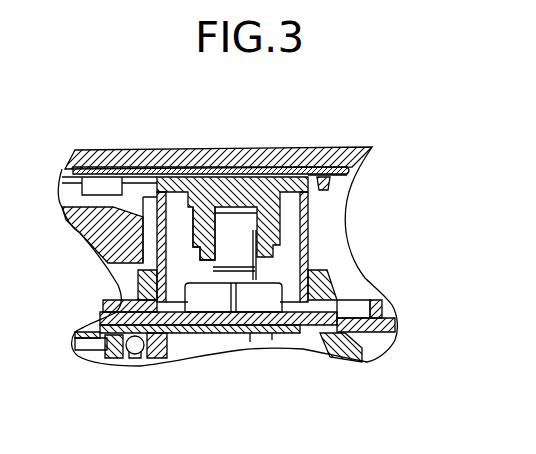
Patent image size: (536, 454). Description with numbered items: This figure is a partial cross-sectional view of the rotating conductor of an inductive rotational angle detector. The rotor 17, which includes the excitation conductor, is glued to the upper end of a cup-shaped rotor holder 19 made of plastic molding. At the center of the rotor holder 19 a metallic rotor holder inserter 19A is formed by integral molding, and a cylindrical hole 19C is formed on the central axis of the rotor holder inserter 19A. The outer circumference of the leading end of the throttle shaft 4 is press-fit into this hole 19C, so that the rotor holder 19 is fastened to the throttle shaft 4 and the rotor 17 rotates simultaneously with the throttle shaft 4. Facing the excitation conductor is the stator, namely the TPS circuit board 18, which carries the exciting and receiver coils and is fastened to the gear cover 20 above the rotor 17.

The TPS circuit board 18 is at (320, 150).
The gear cover 20 is at (260, 167).
The rotor 17 is at (306, 200).
The rotor holder 19 is at (292, 228).
The rotor holder inserter 19A is at (192, 260).
The cylindrical hole 19C is at (250, 240).
The throttle shaft 4 is at (223, 252).